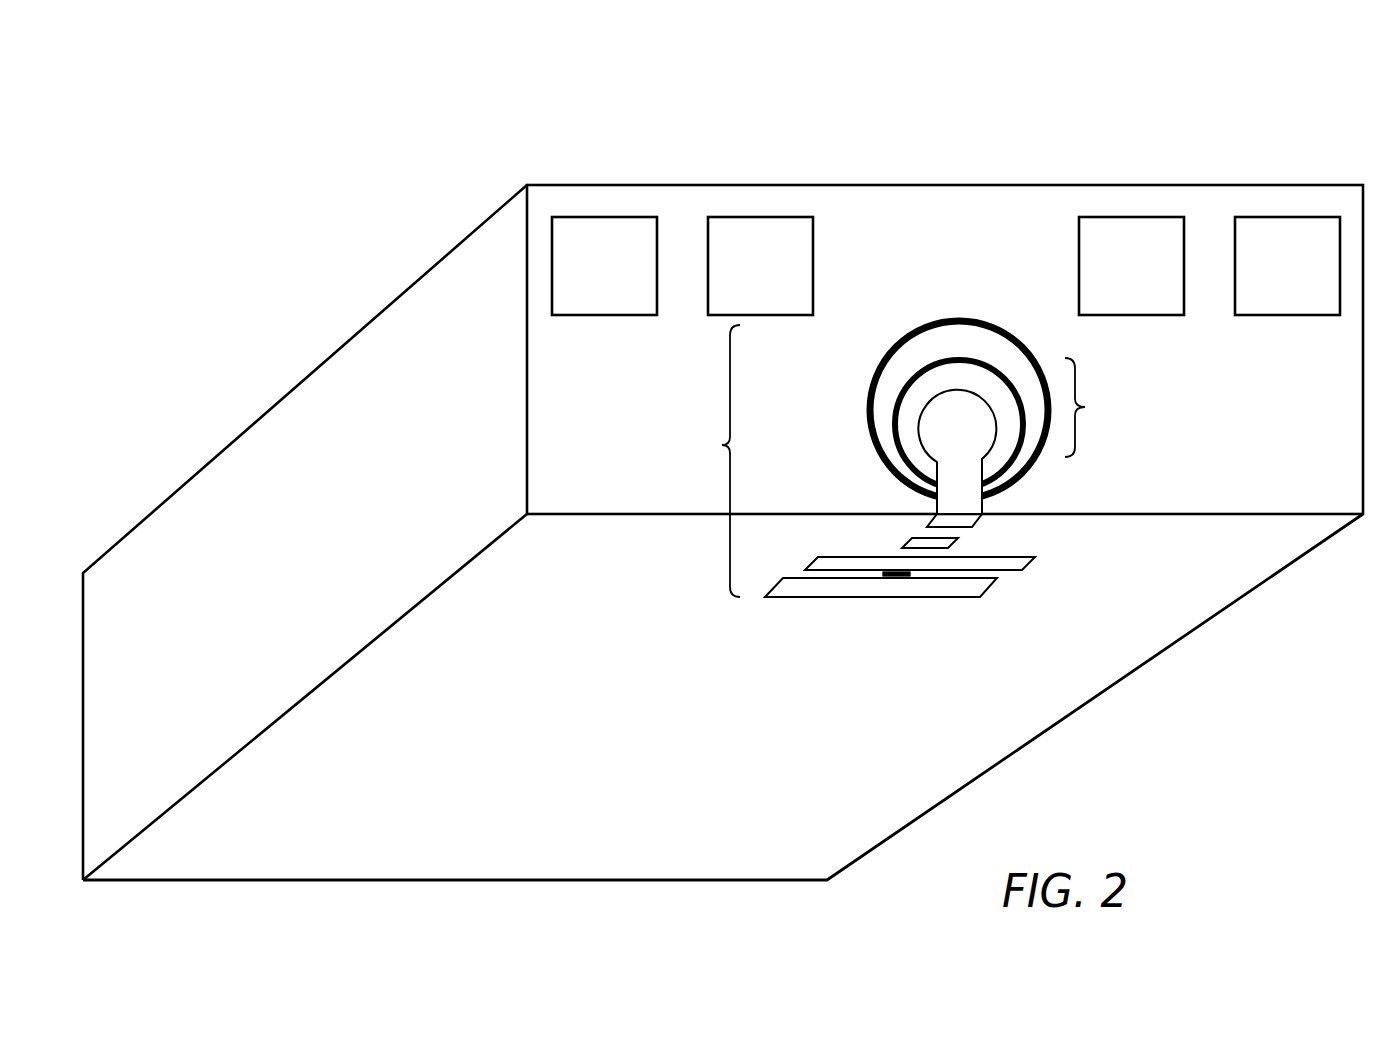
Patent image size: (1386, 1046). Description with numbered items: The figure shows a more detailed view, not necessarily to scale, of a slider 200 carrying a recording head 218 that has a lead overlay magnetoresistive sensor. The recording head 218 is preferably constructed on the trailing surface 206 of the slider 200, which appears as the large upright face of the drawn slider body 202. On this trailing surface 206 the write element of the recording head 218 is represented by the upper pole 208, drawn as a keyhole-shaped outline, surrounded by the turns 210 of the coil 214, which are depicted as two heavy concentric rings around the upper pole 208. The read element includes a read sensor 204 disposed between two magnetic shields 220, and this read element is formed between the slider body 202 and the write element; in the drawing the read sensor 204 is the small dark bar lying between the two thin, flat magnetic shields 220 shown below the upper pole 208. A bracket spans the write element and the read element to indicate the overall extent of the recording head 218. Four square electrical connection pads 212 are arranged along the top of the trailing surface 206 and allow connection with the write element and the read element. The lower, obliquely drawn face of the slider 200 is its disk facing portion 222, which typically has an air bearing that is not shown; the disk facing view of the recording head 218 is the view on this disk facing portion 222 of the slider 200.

The slider 200 is at (222, 219).
The slider body 202 is at (413, 303).
The read sensor 204 is at (893, 578).
The trailing surface 206 is at (952, 210).
The upper pole 208 is at (973, 507).
The turns 210 is at (928, 362).
The electrical connection pads 212 is at (1260, 223).
The coil 214 is at (1096, 407).
The recording head 218 is at (709, 461).
The magnetic shields 220 is at (982, 588).
The disk facing portion 222 is at (1010, 713).